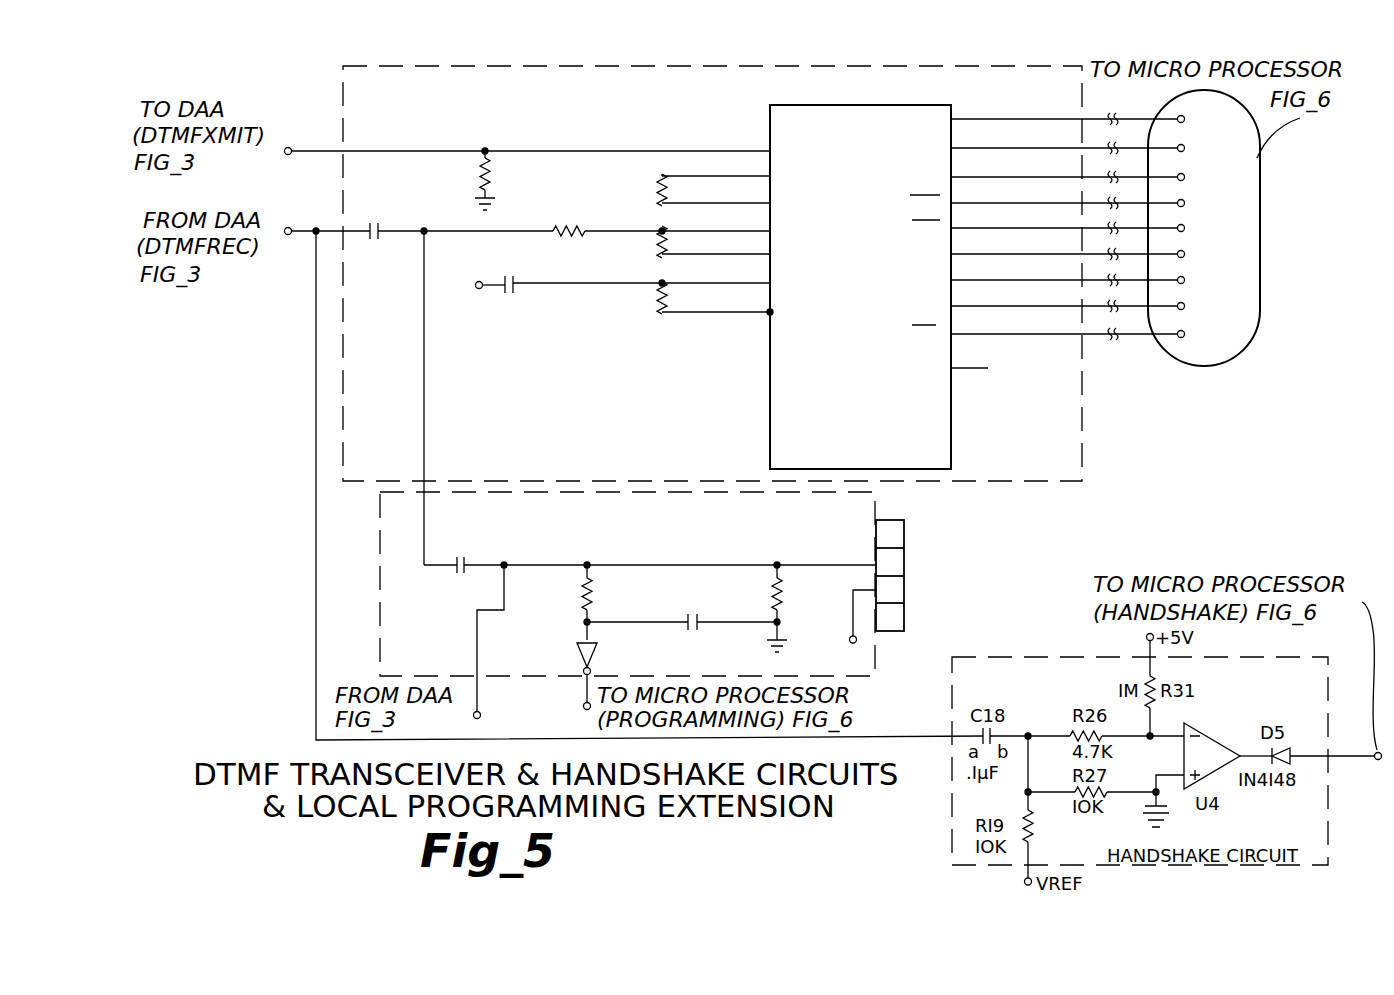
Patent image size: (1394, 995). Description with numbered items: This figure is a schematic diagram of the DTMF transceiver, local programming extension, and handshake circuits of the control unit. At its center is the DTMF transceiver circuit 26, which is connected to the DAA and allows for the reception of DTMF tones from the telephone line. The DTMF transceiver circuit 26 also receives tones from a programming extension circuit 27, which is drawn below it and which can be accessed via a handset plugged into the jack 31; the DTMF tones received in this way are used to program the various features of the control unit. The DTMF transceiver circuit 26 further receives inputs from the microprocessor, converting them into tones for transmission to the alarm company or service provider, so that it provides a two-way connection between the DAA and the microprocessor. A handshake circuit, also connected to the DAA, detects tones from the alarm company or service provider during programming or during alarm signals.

The DTMF transceiver circuit 26 is at (1082, 447).
The programming extension circuit 27 is at (877, 496).
The jack J4 31 is at (904, 620).